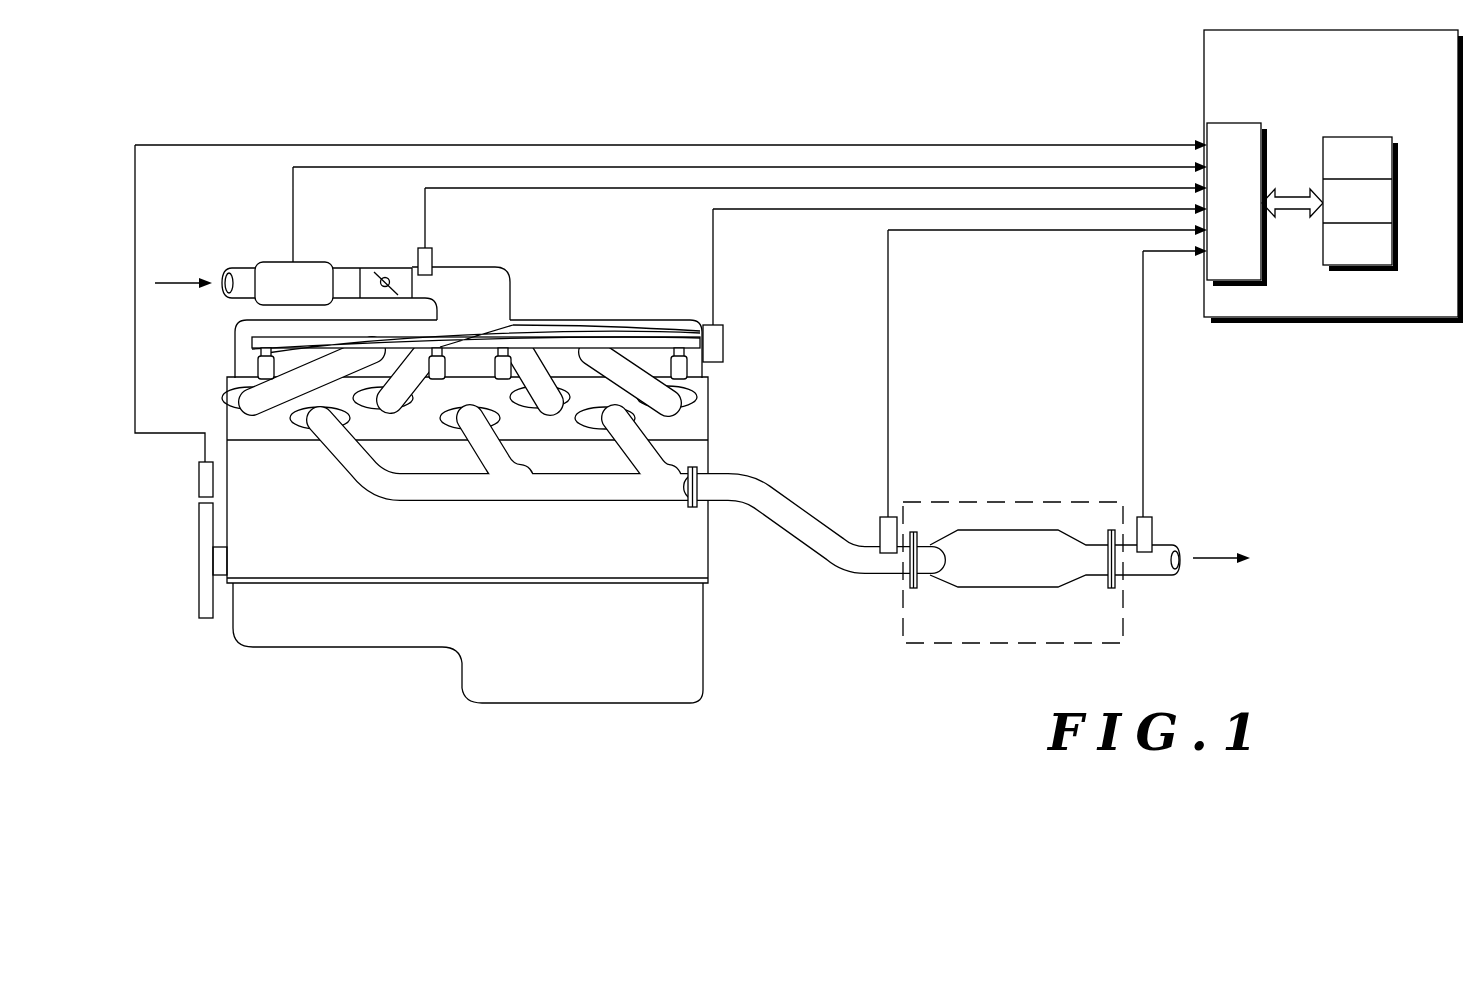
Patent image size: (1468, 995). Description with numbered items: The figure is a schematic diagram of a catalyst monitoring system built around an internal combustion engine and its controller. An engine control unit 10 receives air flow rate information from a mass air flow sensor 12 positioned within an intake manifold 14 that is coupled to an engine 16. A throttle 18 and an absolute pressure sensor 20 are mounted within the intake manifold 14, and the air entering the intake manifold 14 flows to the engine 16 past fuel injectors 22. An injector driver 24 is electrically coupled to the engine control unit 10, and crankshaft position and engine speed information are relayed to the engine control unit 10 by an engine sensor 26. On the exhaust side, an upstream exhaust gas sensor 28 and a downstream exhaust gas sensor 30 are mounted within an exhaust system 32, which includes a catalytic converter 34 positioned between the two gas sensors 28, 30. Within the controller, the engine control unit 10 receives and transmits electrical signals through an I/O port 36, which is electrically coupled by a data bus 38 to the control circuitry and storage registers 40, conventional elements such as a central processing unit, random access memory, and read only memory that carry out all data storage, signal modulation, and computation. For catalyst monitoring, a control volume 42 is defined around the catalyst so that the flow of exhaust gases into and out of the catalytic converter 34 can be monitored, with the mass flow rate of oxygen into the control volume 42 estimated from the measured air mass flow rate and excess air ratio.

The engine control unit 10 is at (1332, 201).
The mass air flow (MAF) sensor 12 is at (262, 262).
The intake manifold 14 is at (347, 272).
The engine 16 is at (690, 557).
The throttle 18 is at (392, 270).
The absolute pressure sensor 20 is at (434, 251).
The fuel injectors 22 is at (258, 358).
The injector driver 24 is at (733, 340).
The engine sensor 26 is at (199, 480).
The upstream exhaust gas sensor 28 is at (880, 517).
The downstream exhaust gas sensor 30 is at (1152, 517).
The exhaust system 32 is at (763, 497).
The catalytic converter 34 is at (1006, 573).
The I/O port 36 is at (1268, 265).
The data bus 38 is at (1293, 193).
The control circuitry and storage registers 40 is at (1394, 192).
The control volume 42 is at (980, 501).